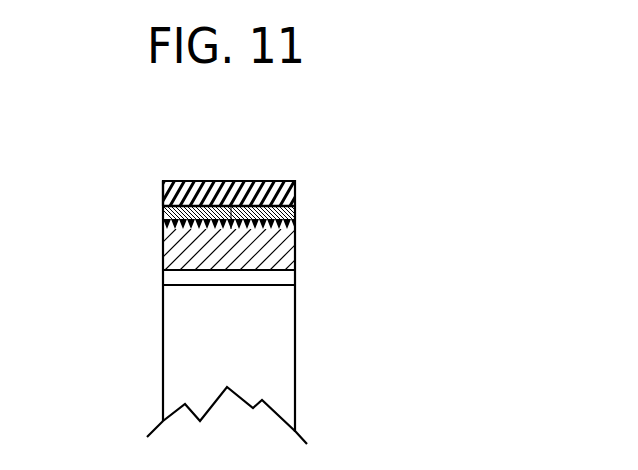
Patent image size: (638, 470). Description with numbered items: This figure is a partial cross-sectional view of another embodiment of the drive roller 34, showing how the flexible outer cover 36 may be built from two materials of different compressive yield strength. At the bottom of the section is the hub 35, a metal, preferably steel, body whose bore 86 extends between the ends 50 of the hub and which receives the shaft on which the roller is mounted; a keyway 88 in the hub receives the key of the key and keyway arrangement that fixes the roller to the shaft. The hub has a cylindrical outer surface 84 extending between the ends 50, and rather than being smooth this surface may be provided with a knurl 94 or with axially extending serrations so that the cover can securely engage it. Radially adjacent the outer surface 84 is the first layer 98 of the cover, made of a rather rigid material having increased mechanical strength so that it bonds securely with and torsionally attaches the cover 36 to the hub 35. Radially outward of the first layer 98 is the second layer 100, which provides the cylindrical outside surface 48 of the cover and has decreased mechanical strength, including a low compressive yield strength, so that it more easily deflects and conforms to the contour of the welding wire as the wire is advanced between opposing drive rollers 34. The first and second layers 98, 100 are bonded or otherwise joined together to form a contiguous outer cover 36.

The drive roller 34 is at (330, 201).
The hub 35 is at (299, 243).
The flexible outer cover 36 is at (139, 200).
The cylindrical outside surface 48 is at (194, 181).
The ends of the hub 50 is at (163, 265).
The cylindrical outer surface 84 is at (231, 228).
The bore 86 is at (272, 320).
The keyway 88 is at (161, 279).
The knurl 94 is at (186, 233).
The first layer 98 is at (161, 220).
The second layer 100 is at (159, 188).